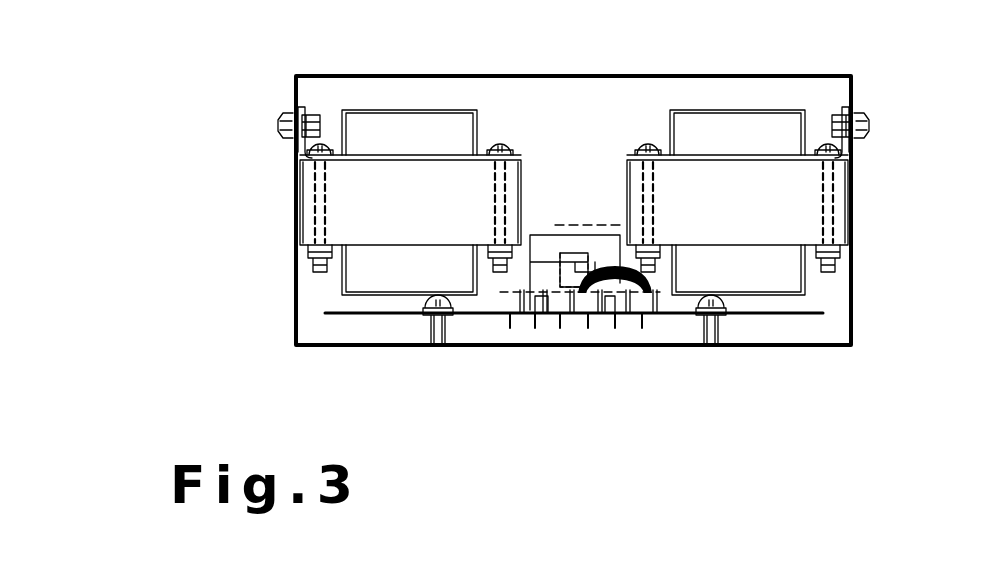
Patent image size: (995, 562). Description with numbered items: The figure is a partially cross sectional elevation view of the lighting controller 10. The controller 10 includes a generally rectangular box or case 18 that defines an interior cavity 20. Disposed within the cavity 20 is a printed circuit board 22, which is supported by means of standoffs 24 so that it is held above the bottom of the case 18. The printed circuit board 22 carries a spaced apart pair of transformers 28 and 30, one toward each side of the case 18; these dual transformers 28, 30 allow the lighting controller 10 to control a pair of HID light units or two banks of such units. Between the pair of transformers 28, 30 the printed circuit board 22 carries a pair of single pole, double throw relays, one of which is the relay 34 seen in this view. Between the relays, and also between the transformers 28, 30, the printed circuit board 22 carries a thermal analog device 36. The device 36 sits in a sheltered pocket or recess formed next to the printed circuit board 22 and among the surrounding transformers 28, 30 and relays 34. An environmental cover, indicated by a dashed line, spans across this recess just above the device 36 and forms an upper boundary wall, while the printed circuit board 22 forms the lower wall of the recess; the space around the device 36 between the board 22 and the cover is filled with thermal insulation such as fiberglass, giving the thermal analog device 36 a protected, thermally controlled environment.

The lighting controller 10 is at (255, 203).
The case 18 is at (370, 76).
The interior cavity 20 is at (645, 118).
The printed circuit board 22 is at (373, 313).
The standoffs 24 is at (452, 340).
The transformer 28 is at (435, 208).
The transformer 30 is at (768, 206).
The SPDT relay 34 is at (542, 275).
The thermal analog device 36 is at (598, 148).